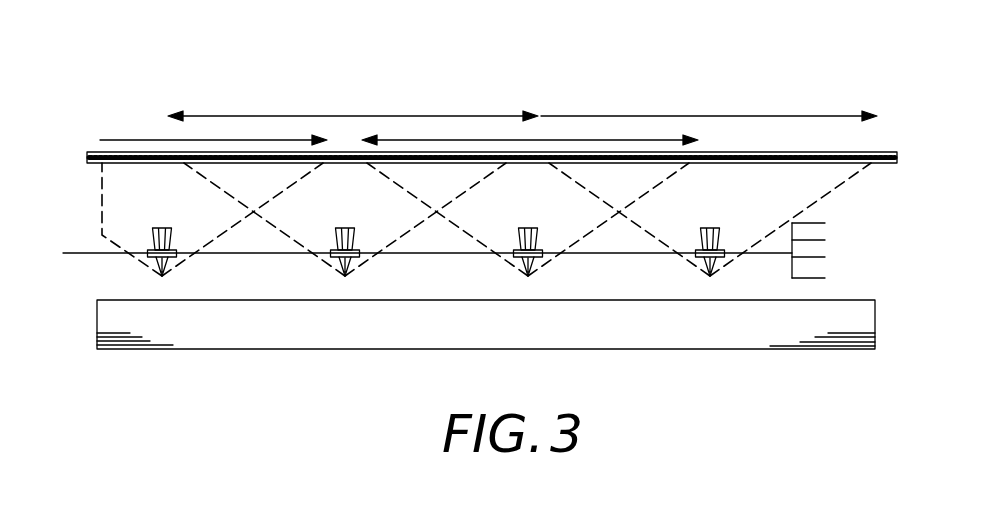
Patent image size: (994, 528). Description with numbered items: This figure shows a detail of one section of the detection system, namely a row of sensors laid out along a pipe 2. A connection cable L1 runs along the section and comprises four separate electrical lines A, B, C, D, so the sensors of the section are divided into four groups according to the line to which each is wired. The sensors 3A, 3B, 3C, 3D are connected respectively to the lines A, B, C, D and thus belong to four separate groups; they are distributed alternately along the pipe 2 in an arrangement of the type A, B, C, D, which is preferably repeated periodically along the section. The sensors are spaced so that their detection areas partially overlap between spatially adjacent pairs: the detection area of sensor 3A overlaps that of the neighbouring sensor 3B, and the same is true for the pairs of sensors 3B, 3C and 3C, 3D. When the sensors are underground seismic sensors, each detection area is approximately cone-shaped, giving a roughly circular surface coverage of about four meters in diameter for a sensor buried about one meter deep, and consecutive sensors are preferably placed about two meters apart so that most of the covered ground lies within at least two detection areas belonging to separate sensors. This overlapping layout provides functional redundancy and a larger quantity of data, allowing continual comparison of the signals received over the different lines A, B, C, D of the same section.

The pipe 2 is at (258, 338).
The sensor 3A is at (163, 228).
The sensor 3B is at (346, 228).
The sensor 3C is at (528, 228).
The sensor 3D is at (710, 228).
The connection cable L1 is at (630, 254).
The electrical line A is at (834, 220).
The electrical line B is at (834, 240).
The electrical line C is at (834, 258).
The electrical line D is at (834, 278).